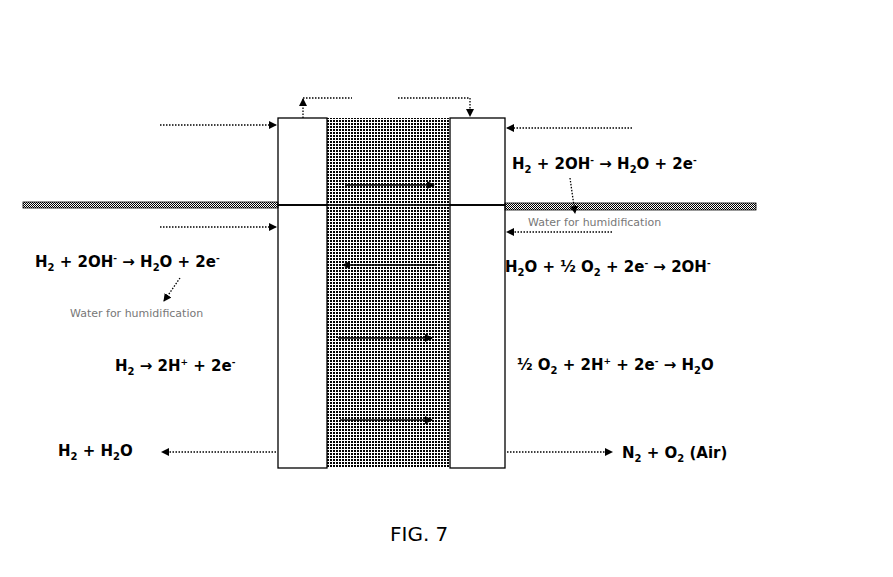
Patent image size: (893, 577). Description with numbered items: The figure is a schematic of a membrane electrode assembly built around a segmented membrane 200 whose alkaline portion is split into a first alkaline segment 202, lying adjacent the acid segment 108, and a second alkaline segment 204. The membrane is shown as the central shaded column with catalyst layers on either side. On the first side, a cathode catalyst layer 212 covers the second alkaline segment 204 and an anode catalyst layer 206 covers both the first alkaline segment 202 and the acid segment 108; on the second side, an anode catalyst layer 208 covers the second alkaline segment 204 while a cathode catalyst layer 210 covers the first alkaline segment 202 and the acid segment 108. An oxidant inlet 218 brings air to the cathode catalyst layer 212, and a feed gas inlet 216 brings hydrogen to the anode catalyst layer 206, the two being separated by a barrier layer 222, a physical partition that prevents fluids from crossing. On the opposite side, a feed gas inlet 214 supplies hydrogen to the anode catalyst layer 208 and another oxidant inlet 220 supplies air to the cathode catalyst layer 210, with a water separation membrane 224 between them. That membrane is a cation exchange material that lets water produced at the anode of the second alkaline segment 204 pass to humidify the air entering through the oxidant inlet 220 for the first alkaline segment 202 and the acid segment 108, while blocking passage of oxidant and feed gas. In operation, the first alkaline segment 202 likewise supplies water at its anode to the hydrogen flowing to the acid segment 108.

The segmented membrane 200 is at (348, 110).
The first alkaline segment 202 is at (430, 233).
The second alkaline segment 204 is at (418, 133).
The acid segment 108 is at (385, 448).
The cathode catalyst layer 212 is at (298, 135).
The anode catalyst layer 206 is at (300, 445).
The anode catalyst layer 208 is at (488, 135).
The cathode catalyst layer 210 is at (480, 445).
The oxidant inlet 218 is at (183, 123).
The feed gas inlet 216 is at (118, 225).
The barrier layer 222 is at (68, 203).
The feed gas inlet 214 is at (598, 123).
The water separation membrane 224 is at (742, 203).
The oxidant inlet 220 is at (740, 236).